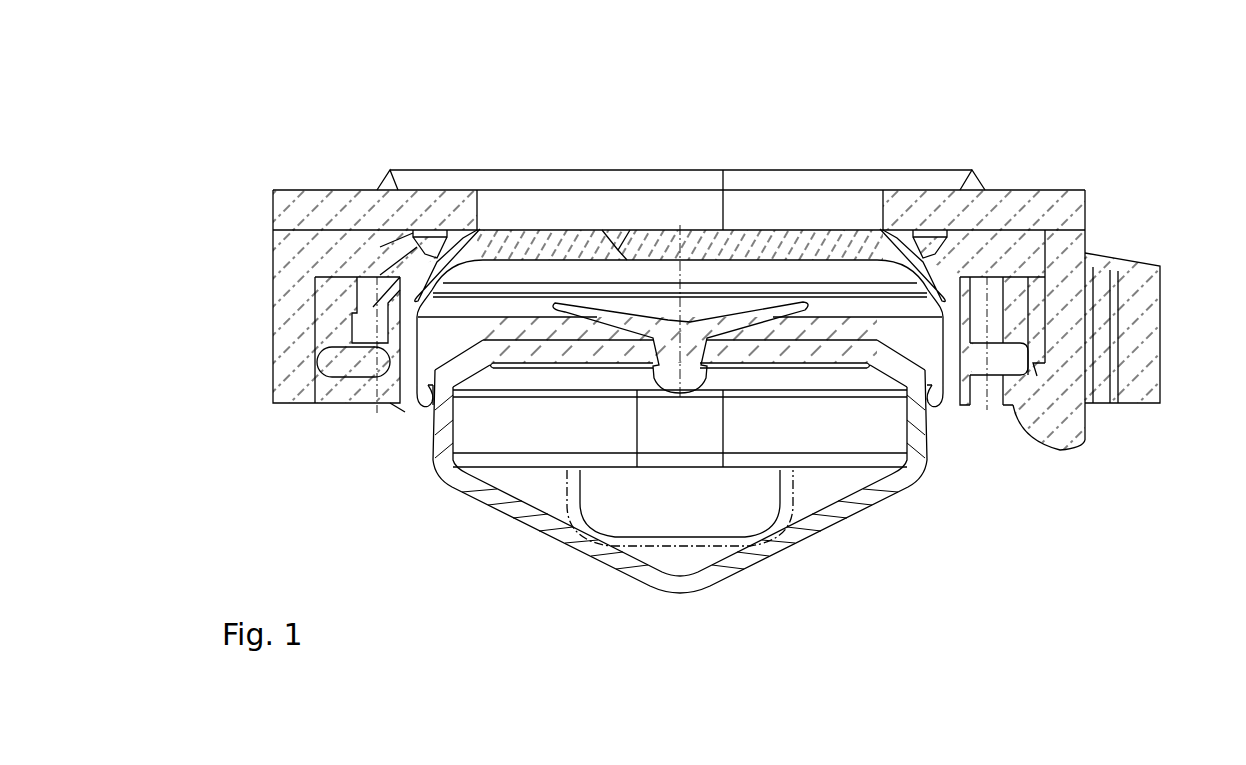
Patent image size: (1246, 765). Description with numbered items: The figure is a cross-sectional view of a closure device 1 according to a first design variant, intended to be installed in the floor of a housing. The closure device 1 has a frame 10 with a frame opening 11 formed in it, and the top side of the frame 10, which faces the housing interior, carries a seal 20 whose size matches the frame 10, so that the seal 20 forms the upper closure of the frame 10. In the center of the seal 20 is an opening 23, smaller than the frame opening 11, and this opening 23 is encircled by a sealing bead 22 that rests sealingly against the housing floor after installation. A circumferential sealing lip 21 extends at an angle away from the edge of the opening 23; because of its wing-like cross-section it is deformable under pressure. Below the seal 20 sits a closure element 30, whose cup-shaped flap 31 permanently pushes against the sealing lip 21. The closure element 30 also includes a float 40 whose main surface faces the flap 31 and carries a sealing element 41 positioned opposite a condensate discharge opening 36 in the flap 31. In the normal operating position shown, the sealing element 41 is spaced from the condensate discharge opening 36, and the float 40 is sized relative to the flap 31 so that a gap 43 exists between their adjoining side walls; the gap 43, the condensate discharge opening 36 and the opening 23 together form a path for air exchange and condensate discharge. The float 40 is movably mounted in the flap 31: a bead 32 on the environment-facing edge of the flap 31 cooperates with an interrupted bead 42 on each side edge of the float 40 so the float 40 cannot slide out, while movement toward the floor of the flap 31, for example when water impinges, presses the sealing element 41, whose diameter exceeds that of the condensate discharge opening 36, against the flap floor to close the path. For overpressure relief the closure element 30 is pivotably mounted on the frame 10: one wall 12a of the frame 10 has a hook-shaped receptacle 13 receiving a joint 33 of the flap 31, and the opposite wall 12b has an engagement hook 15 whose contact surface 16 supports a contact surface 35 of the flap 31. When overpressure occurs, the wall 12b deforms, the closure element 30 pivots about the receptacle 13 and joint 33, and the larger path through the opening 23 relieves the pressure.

The closure device 1 is at (1118, 108).
The frame 10 is at (285, 258).
The frame opening 11 is at (970, 250).
The wall 12a is at (283, 302).
The opposite wall 12b is at (1073, 315).
The hook shaped receptacle 13 is at (327, 392).
The engagement hook 15 is at (1070, 427).
The contact surface 16 is at (1037, 363).
The seal 20 is at (1057, 197).
The sealing lip 21 is at (437, 258).
The sealing bead 22 is at (387, 177).
The opening 23 is at (477, 227).
The closure element 30 is at (932, 447).
The flap 31 is at (565, 235).
The bead 32 is at (417, 412).
The joint 33 is at (357, 362).
The contact surface 35 is at (1007, 360).
The condensate discharge opening 36 is at (618, 248).
The float 40 is at (553, 497).
The sealing element 41 is at (740, 313).
The bead 42 is at (431, 417).
The gap 43 is at (423, 420).